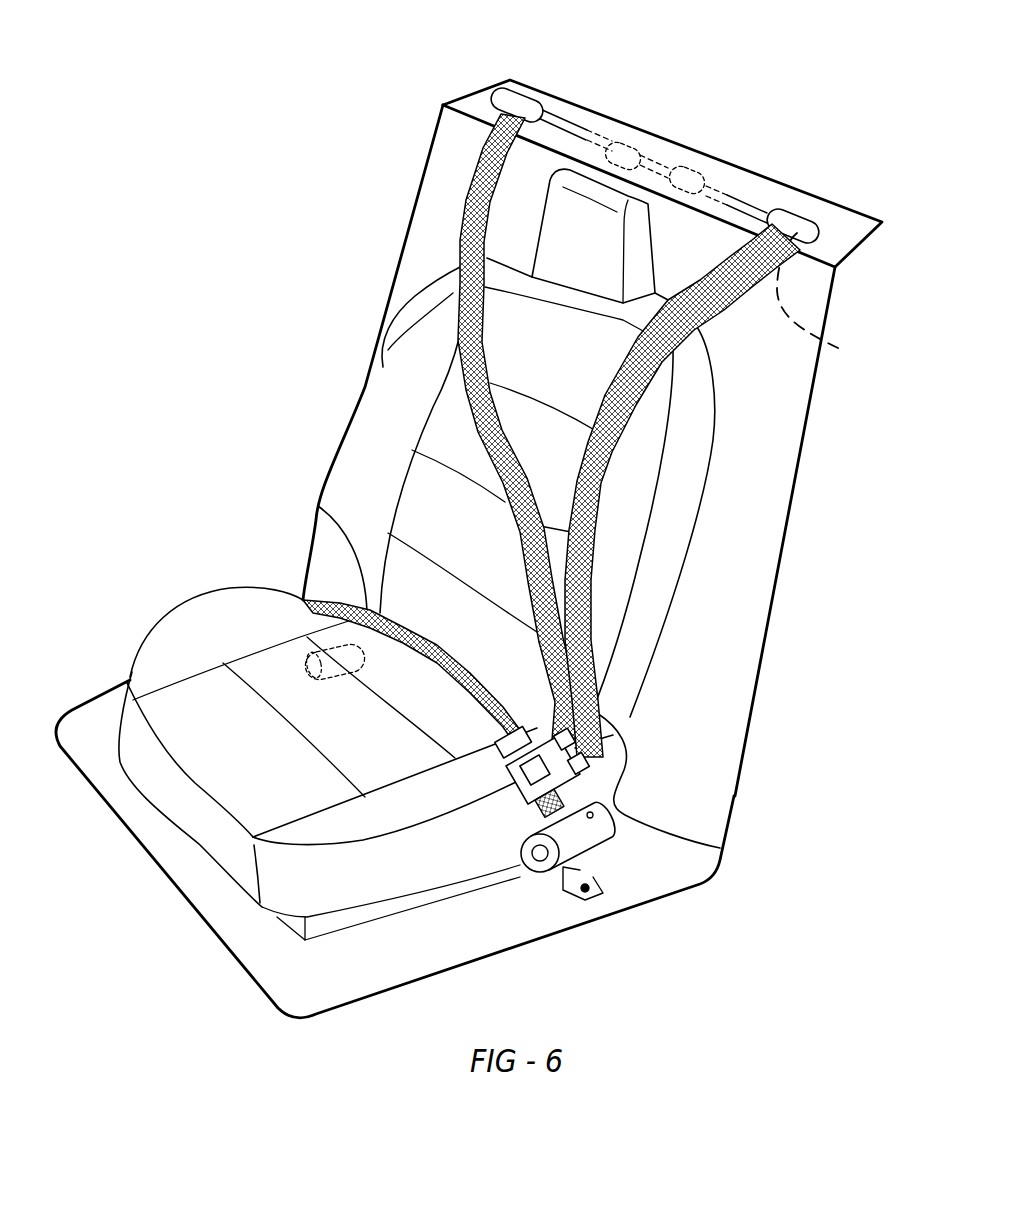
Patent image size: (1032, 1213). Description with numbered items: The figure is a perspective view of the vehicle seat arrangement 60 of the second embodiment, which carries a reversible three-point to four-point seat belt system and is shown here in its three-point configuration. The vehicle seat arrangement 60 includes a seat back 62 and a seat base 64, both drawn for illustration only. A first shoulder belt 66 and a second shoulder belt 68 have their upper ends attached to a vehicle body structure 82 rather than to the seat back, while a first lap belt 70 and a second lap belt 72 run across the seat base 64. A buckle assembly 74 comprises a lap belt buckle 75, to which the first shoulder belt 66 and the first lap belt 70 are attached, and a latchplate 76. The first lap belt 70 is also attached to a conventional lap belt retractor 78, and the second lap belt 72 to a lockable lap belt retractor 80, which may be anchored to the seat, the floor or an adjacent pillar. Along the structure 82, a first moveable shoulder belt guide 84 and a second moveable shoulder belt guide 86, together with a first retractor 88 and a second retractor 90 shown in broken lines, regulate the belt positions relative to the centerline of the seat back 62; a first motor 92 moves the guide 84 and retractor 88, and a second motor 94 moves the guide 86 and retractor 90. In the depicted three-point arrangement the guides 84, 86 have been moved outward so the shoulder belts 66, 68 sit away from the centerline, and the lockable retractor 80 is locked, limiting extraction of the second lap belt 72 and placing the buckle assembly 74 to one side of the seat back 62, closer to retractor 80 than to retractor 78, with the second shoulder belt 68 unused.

The vehicle seat arrangement 60 is at (302, 353).
The seat back 62 is at (445, 320).
The seat base 64 is at (187, 647).
The first shoulder belt 66 is at (465, 395).
The second shoulder belt 68 is at (613, 413).
The first lap belt 70 is at (363, 585).
The second lap belt 72 is at (525, 835).
The buckle assembly 74 is at (548, 790).
The lap belt buckle 75 is at (507, 747).
The latchplate 76 is at (723, 844).
The lap belt retractor 78 is at (300, 657).
The lap belt retractor 80 is at (583, 837).
The structure 82 is at (657, 152).
The first moveable shoulder belt guide 84 is at (530, 102).
The second moveable shoulder belt guide 86 is at (807, 200).
The first retractor 88 is at (485, 98).
The second retractor 90 is at (820, 300).
The first motor 92 is at (630, 135).
The second motor 94 is at (700, 163).